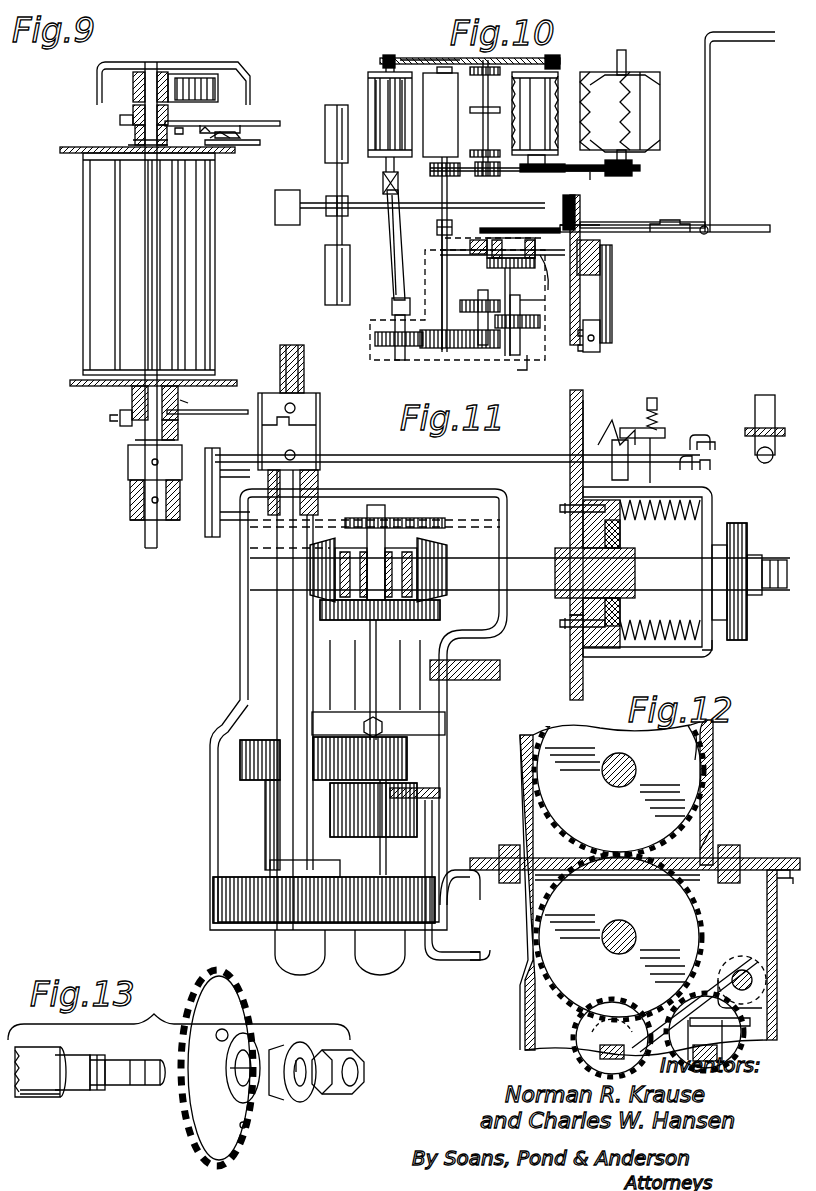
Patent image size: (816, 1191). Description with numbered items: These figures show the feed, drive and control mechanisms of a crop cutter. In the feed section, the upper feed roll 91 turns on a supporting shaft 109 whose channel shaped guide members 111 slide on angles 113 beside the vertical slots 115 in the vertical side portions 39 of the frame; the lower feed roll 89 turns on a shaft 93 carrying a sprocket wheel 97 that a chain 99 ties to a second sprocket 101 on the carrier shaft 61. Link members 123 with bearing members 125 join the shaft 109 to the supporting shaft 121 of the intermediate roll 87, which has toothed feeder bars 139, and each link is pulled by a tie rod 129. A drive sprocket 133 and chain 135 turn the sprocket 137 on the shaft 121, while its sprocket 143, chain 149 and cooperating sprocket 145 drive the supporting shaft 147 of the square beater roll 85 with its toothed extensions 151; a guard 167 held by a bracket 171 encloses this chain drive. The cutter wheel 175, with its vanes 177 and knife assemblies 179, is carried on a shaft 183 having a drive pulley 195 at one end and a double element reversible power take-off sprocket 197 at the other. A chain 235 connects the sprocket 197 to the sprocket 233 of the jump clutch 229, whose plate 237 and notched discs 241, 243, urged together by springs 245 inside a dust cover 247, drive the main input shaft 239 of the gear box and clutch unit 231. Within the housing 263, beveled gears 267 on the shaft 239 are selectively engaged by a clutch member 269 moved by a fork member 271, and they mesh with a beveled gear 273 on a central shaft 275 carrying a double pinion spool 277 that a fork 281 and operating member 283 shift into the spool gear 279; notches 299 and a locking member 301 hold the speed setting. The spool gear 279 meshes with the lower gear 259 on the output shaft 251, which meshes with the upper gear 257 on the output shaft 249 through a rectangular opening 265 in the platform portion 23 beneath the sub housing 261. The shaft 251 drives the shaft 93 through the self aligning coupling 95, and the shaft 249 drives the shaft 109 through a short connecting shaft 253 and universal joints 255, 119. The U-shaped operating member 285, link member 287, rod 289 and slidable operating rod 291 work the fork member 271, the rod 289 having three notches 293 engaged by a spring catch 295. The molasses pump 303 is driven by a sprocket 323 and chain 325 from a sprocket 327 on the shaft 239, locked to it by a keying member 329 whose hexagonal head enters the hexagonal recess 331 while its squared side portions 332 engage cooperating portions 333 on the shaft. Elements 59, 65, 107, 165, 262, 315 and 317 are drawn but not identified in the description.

In FIG. 12, the platform portion of the frame 23 is at (760, 858).
In FIG. 9, the vertical side portions of the frame 39 is at (70, 152).
In FIG. 10, the gear 59 is at (474, 67).
In FIG. 10, the supporting shaft for the rear end of the carrier 61 is at (490, 140).
In FIG. 10, the gear 65 is at (492, 107).
In FIG. 10, the beater roll 85 is at (655, 100).
In FIG. 10, the intermediate feed roll 87 is at (580, 156).
In FIG. 10, the lower feed roll 89 is at (454, 93).
In FIG. 9, the upper feed roll 91 is at (100, 267).
In FIG. 10, the upper feed roll 91 is at (368, 76).
In FIG. 10, the shaft 93 is at (447, 194).
In FIG. 11, the shaft 93 is at (304, 372).
In FIG. 10, the self aligning coupling 95 is at (437, 228).
In FIG. 11, the self aligning coupling 95 is at (320, 437).
In FIG. 10, the sprocket wheel 97 is at (435, 176).
In FIG. 10, the chain 99 is at (472, 166).
In FIG. 10, the second sprocket 101 is at (495, 176).
In FIG. 9, the cylinder wall 107 is at (118, 240).
In FIG. 10, the cylinder wall 107 is at (392, 118).
In FIG. 9, the supporting shaft for the upper feed roll 109 is at (140, 118).
In FIG. 10, the supporting shaft for the upper feed roll 109 is at (382, 62).
In FIG. 9, the channel shaped guide members 111 is at (135, 130).
In FIG. 9, the angles 113 is at (130, 140).
In FIG. 9, the vertical slots 115 is at (152, 150).
In FIG. 9, the universal joint 119 is at (128, 470).
In FIG. 10, the universal joint 119 is at (383, 184).
In FIG. 10, the supporting shaft for the intermediate roll 121 is at (554, 70).
In FIG. 9, the link members 123 is at (240, 130).
In FIG. 9, the bearing members 125 is at (125, 115).
In FIG. 9, the tie rod 129 is at (180, 132).
In FIG. 9, the drive sprocket 133 is at (163, 72).
In FIG. 10, the drive sprocket 133 is at (390, 56).
In FIG. 9, the chain 135 is at (212, 78).
In FIG. 10, the chain 135 is at (418, 58).
In FIG. 10, the sprocket 137 is at (555, 56).
In FIG. 10, the toothed feeder bars 139 is at (558, 88).
In FIG. 10, the sprocket 143 is at (535, 172).
In FIG. 10, the cooperating sprocket 145 is at (630, 176).
In FIG. 10, the supporting shaft for the beater roll 147 is at (626, 54).
In FIG. 10, the chain 149 is at (582, 174).
In FIG. 10, the toothed extensions 151 is at (650, 118).
In FIG. 10, the bracket 165 is at (630, 76).
In FIG. 9, the guard 167 is at (192, 62).
In FIG. 9, the bracket 171 is at (250, 122).
In FIG. 10, the cutter wheel 175 is at (337, 180).
In FIG. 10, the vanes 177 is at (325, 110).
In FIG. 10, the adjustable knife assemblies 179 is at (350, 125).
In FIG. 10, the shaft 183 is at (362, 208).
In FIG. 10, the drive pulley 195 is at (290, 225).
In FIG. 10, the main power take-off sprocket 197 is at (578, 205).
In FIG. 10, the jump clutch 229 is at (605, 268).
In FIG. 11, the jump clutch 229 is at (685, 548).
In FIG. 10, the gear box and clutch unit 231 is at (546, 284).
In FIG. 11, the gear box and clutch unit 231 is at (342, 668).
In FIG. 12, the gear box and clutch unit 231 is at (743, 901).
In FIG. 10, the sprocket 233 is at (585, 275).
In FIG. 11, the sprocket 233 is at (570, 678).
In FIG. 10, the chain 235 is at (585, 228).
In FIG. 11, the chain 235 is at (585, 410).
In FIG. 11, the plate 237 is at (575, 610).
In FIG. 10, the main input shaft 239 is at (550, 250).
In FIG. 11, the main input shaft 239 is at (458, 595).
In FIG. 13, the main input shaft 239 is at (30, 1100).
In FIG. 11, the notched steel disc 241 is at (605, 648).
In FIG. 11, the notched steel disc 243 is at (622, 612).
In FIG. 11, the springs 245 is at (712, 515).
In FIG. 11, the dust cover 247 is at (712, 650).
In FIG. 10, the output shaft 249 is at (370, 322).
In FIG. 12, the output shaft 249 is at (636, 773).
In FIG. 10, the output shaft 251 is at (440, 260).
In FIG. 11, the output shaft 251 is at (280, 648).
In FIG. 12, the output shaft 251 is at (636, 940).
In FIG. 10, the short connecting shaft 253 is at (396, 258).
In FIG. 10, the universal joint 255 is at (392, 308).
In FIG. 10, the upper gear 257 is at (375, 341).
In FIG. 12, the upper gear 257 is at (700, 785).
In FIG. 10, the lower gear 259 is at (425, 350).
In FIG. 11, the lower gear 259 is at (220, 898).
In FIG. 12, the lower gear 259 is at (560, 975).
In FIG. 12, the sub housing 261 is at (713, 762).
In FIG. 10, the bearing 262 is at (472, 244).
In FIG. 11, the housing 263 is at (210, 738).
In FIG. 12, the housing 263 is at (522, 1010).
In FIG. 12, the rectangular opening 265 is at (715, 845).
In FIG. 10, the beveled gears 267 is at (565, 274).
In FIG. 11, the beveled gears 267 is at (320, 598).
In FIG. 10, the clutch member 269 is at (515, 238).
In FIG. 11, the clutch member 269 is at (395, 548).
In FIG. 11, the fork member 271 is at (367, 538).
In FIG. 10, the beveled gear 273 is at (490, 264).
In FIG. 11, the beveled gear 273 is at (350, 620).
In FIG. 12, the beveled gear 273 is at (700, 995).
In FIG. 10, the central shaft 275 is at (506, 283).
In FIG. 11, the central shaft 275 is at (366, 686).
In FIG. 12, the central shaft 275 is at (722, 1052).
In FIG. 10, the double pinion spool 277 is at (522, 330).
In FIG. 11, the double pinion spool 277 is at (405, 760).
In FIG. 12, the double pinion spool 277 is at (745, 1035).
In FIG. 10, the spool gear 279 is at (472, 320).
In FIG. 11, the spool gear 279 is at (270, 802).
In FIG. 12, the spool gear 279 is at (590, 1052).
In FIG. 10, the fork 281 is at (545, 303).
In FIG. 11, the fork 281 is at (420, 796).
In FIG. 12, the fork 281 is at (750, 1012).
In FIG. 10, the operating member 283 is at (535, 372).
In FIG. 11, the operating member 283 is at (455, 962).
In FIG. 12, the operating member 283 is at (753, 975).
In FIG. 10, the U-shaped operating member 285 is at (745, 228).
In FIG. 11, the U-shaped operating member 285 is at (755, 405).
In FIG. 10, the link member 287 is at (672, 220).
In FIG. 11, the link member 287 is at (700, 435).
In FIG. 10, the rod 289 is at (610, 224).
In FIG. 11, the rod 289 is at (485, 456).
In FIG. 10, the slidable operating rod 291 is at (505, 228).
In FIG. 11, the slidable operating rod 291 is at (410, 518).
In FIG. 11, the notches 293 is at (605, 440).
In FIG. 11, the spring catch 295 is at (657, 418).
In FIG. 11, the notches 299 is at (440, 825).
In FIG. 11, the locking member 301 is at (455, 905).
In FIG. 10, the molasses pump 303 is at (595, 352).
In FIG. 9, the bracket 315 is at (255, 145).
In FIG. 9, the bracket 317 is at (212, 165).
In FIG. 10, the sprocket 323 is at (612, 332).
In FIG. 10, the chain 325 is at (612, 306).
In FIG. 11, the chain 325 is at (747, 630).
In FIG. 11, the sprocket 327 is at (740, 525).
In FIG. 13, the sprocket 327 is at (230, 1125).
In FIG. 11, the keying member 329 is at (765, 558).
In FIG. 13, the keying member 329 is at (300, 1102).
In FIG. 13, the hexagonal recess 331 is at (248, 1100).
In FIG. 13, the squared side portions 332 is at (300, 1062).
In FIG. 13, the cooperating portions 333 is at (95, 1092).